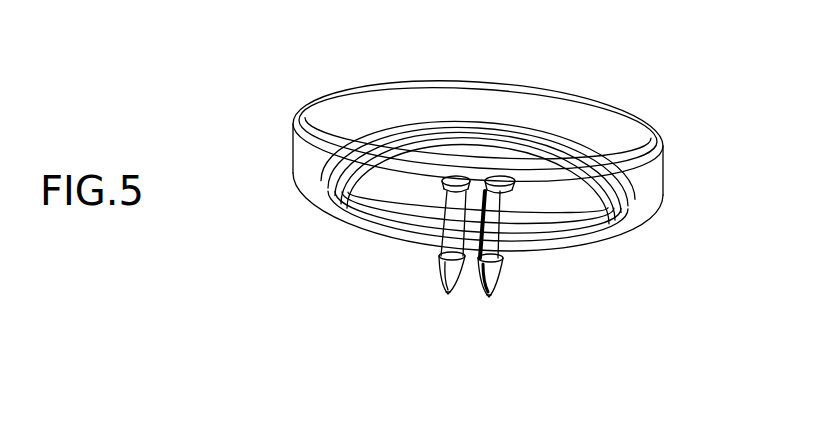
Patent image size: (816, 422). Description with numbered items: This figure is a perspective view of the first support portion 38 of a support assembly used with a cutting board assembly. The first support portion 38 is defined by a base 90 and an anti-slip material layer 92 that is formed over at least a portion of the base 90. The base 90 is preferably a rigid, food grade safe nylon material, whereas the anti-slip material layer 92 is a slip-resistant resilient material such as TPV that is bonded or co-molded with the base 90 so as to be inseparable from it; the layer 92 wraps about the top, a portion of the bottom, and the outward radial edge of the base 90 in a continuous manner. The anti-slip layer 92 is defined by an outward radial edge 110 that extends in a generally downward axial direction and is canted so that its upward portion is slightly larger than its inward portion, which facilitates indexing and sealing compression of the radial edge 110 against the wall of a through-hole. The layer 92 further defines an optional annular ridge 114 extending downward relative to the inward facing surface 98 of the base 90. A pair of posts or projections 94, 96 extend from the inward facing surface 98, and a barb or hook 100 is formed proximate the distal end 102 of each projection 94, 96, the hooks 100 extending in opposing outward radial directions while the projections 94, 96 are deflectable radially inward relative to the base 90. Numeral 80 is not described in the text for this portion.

The first support portion 38 is at (597, 68).
The anti-slip material layer 92 is at (478, 166).
The outward radial edge 110 is at (478, 128).
The annular ridge 114 is at (478, 181).
The base 90 is at (478, 180).
The inward facing surface 98 is at (478, 180).
The projection 96 is at (445, 237).
The projection 94 is at (505, 243).
The hook 100 is at (430, 262).
The distal end 102 is at (448, 306).
The device 80 is at (37, 6).